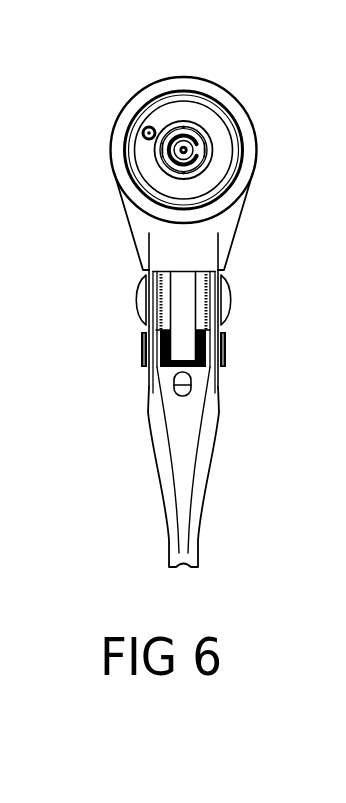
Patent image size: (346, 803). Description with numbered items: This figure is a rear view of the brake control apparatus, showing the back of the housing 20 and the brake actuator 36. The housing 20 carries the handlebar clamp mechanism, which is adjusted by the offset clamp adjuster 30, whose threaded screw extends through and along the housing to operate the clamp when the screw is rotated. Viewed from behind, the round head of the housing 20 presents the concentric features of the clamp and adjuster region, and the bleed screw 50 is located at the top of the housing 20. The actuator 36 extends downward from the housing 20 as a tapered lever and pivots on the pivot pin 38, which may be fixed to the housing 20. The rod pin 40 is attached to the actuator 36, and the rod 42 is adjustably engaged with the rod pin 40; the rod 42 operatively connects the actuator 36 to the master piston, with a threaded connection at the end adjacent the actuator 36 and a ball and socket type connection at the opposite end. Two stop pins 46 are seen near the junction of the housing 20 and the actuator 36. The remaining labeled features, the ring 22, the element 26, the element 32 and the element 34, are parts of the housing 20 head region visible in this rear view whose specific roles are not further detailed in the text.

The housing 20 is at (227, 230).
The rim ring 22 is at (210, 102).
The face plate 26 is at (143, 151).
The offset clamp adjuster 30 is at (127, 67).
The bezel ring 32 is at (207, 138).
The central hub 34 is at (200, 155).
The brake actuator 36 is at (185, 425).
The pivot pin 38 is at (142, 300).
The rod pin 40 is at (142, 352).
The rod 42 is at (185, 301).
The stop pins 46 is at (196, 262).
The bleed screw 50 is at (183, 78).